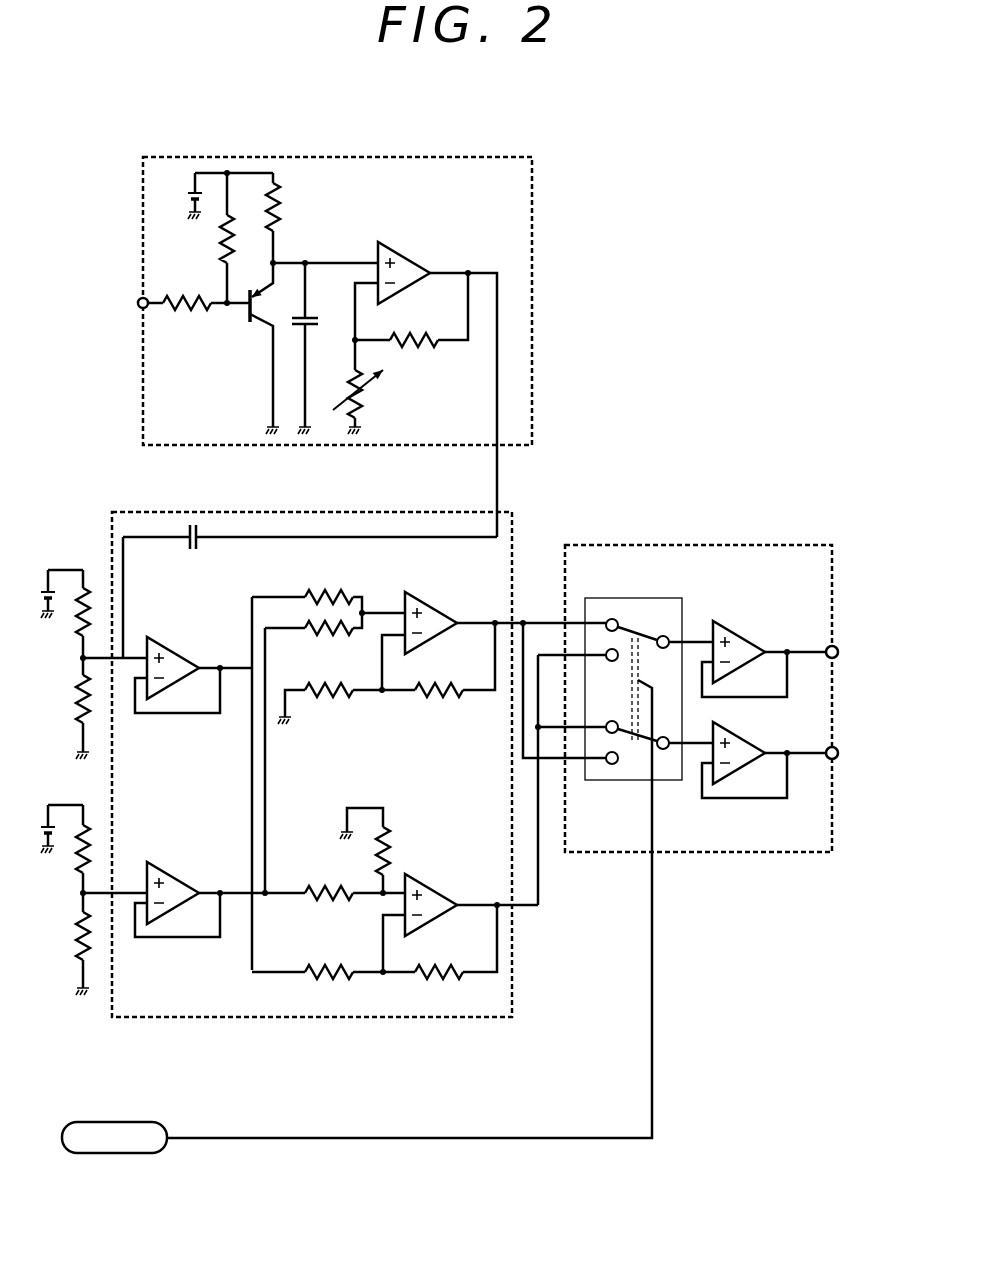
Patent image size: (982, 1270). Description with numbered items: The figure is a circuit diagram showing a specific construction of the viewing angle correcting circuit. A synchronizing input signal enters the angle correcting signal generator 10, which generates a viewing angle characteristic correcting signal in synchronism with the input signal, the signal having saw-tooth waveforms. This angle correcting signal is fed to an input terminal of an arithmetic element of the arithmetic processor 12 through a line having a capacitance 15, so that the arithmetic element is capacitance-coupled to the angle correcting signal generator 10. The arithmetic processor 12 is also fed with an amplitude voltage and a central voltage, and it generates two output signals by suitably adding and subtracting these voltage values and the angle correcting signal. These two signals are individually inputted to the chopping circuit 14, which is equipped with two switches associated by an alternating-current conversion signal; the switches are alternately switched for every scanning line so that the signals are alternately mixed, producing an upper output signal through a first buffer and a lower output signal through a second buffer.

The angle correcting signal generator 10 is at (190, 156).
The arithmetic processor 12 is at (163, 512).
The chopping circuit 14 is at (673, 545).
The capacitance 15 is at (197, 546).